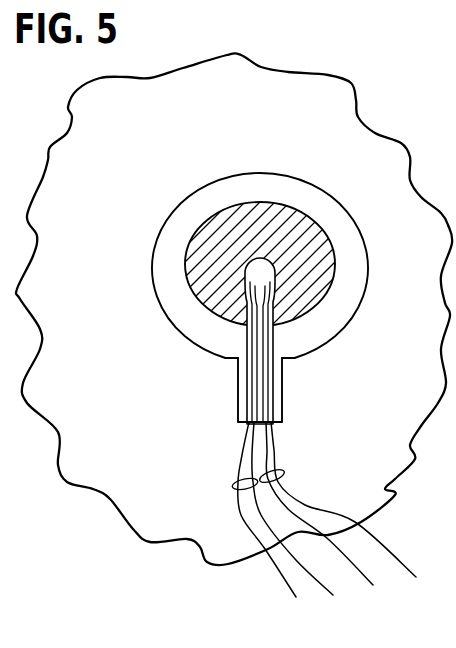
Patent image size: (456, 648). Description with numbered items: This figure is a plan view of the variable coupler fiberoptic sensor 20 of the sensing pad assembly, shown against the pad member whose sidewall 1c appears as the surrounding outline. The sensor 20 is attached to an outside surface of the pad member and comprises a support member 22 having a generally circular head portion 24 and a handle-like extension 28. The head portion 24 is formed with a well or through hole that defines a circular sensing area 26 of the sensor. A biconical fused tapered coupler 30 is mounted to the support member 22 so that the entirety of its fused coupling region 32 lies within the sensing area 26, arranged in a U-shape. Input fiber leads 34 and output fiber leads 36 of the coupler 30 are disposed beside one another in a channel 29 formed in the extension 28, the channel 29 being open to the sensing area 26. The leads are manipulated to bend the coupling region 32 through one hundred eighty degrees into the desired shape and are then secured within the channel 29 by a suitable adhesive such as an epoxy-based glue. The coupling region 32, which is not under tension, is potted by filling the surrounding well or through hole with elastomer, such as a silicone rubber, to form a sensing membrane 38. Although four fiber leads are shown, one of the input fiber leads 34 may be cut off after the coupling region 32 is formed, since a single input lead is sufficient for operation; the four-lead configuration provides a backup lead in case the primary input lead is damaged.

The sidewall 1c is at (268, 87).
The variable coupler fiberoptic sensor 20 is at (256, 366).
The support member 22 is at (166, 209).
The head portion 24 is at (165, 282).
The sensing area 26 is at (192, 258).
The extension 28 is at (238, 378).
The channel 29 is at (265, 383).
The biconical fused tapered coupler 30 is at (197, 334).
The fused coupling region 32 is at (329, 341).
The input fiber leads 34 is at (236, 486).
The output fiber leads 36 is at (284, 471).
The sensing membrane 38 is at (275, 213).